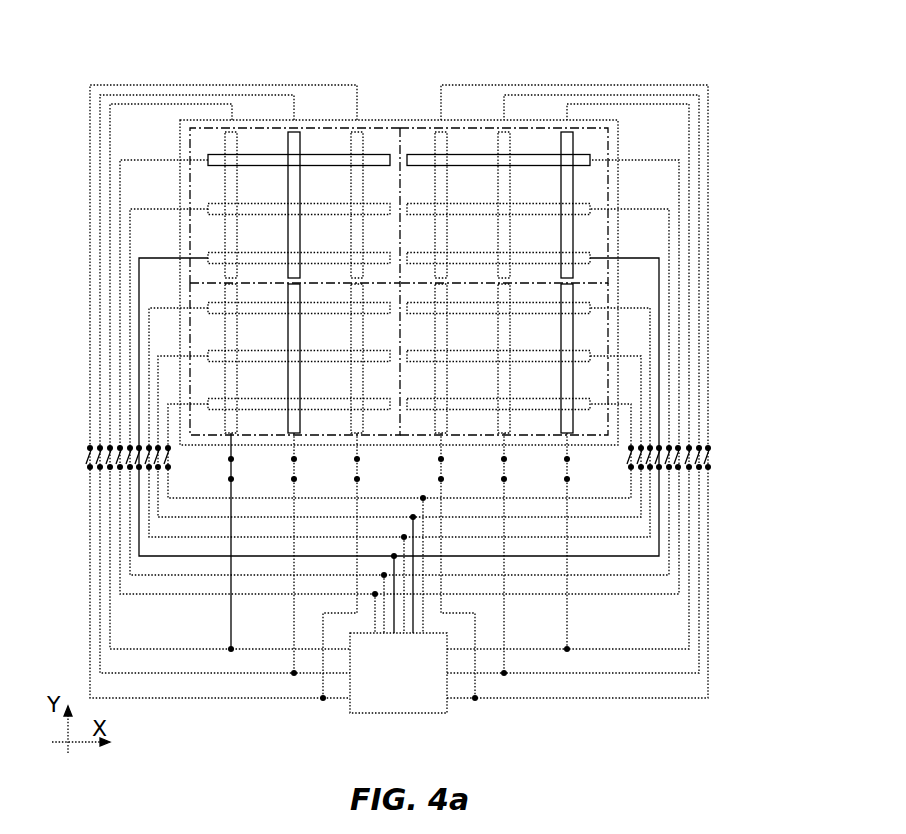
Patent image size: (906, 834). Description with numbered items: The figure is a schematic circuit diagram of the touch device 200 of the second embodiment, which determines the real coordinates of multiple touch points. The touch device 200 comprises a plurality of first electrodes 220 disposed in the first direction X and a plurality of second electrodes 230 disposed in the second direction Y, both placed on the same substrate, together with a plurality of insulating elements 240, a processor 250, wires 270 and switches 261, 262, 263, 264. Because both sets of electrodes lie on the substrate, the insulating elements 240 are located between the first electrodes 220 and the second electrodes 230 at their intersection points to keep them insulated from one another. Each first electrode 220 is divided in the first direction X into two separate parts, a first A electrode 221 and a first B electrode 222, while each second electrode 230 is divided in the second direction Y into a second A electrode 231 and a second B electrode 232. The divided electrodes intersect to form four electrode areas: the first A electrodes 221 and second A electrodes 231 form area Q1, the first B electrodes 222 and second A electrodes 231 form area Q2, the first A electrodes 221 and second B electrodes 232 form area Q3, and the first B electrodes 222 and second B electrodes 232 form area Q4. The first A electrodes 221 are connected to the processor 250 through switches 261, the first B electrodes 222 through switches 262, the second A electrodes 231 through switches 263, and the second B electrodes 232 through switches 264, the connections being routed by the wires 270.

The touch device 200 is at (128, 67).
The first electrode area Q1 is at (203, 142).
The first electrode area Q2 is at (610, 150).
The first electrode area Q3 is at (208, 428).
The first electrode area Q4 is at (593, 432).
The first electrodes 220 is at (588, 149).
The first A electrode 221 is at (348, 160).
The first B electrode 222 is at (428, 150).
The second electrodes 230 is at (512, 138).
The second A electrode 231 is at (437, 132).
The second B electrode 232 is at (440, 437).
The insulating elements 240 is at (286, 156).
The processor 250 is at (398, 673).
The switches 261 is at (100, 446).
The switches 262 is at (700, 446).
The switches 263 is at (92, 465).
The switches 264 is at (358, 432).
The wires 270 is at (710, 85).